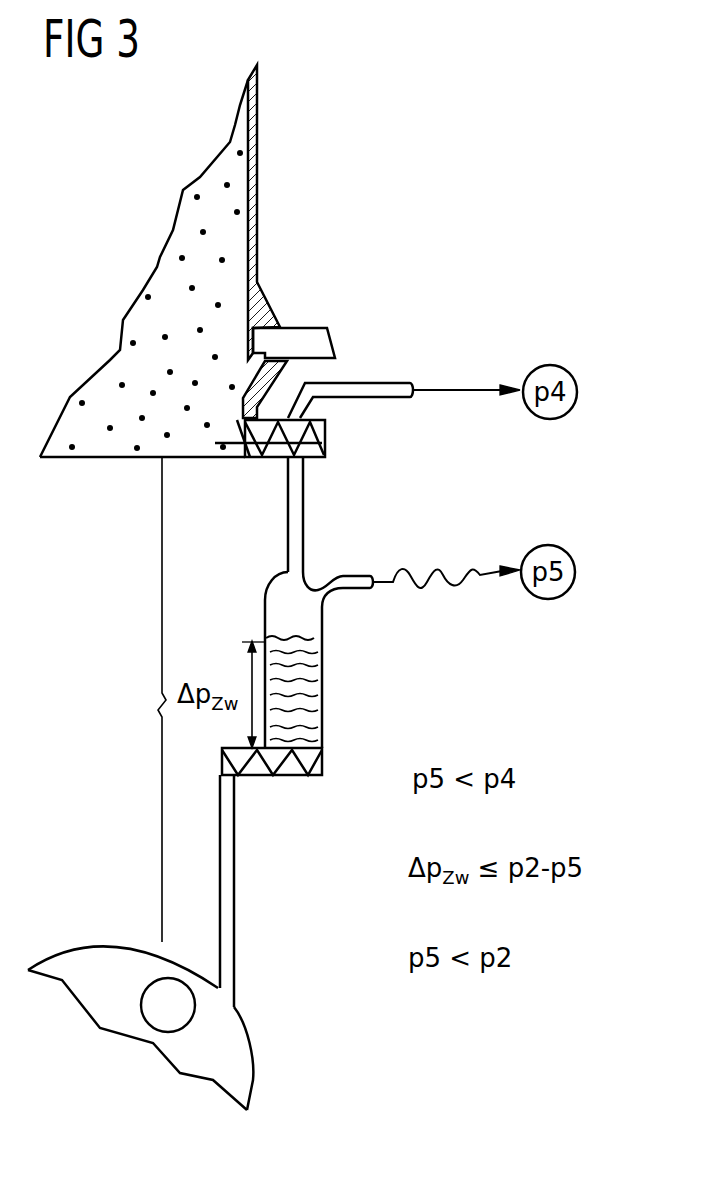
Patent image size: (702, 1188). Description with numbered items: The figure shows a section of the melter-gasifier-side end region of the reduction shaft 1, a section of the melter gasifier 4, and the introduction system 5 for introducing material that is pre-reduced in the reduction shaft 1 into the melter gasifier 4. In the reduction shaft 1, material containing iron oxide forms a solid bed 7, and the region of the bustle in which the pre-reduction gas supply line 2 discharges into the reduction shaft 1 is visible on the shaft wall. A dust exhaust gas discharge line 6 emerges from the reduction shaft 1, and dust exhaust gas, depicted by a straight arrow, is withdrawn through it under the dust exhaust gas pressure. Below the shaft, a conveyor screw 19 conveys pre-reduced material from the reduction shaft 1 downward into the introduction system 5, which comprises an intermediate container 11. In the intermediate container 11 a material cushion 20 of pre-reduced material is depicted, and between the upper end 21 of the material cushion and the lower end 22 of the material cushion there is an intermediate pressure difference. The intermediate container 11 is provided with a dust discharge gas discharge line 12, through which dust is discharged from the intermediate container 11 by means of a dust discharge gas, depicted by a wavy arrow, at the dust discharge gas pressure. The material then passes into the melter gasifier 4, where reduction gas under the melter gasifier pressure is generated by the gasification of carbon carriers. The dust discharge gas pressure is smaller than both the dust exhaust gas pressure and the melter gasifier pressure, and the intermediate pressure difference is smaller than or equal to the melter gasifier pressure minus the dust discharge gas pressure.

The reduction shaft 1 is at (253, 198).
The pre-reduction gas supply line 2 is at (302, 333).
The melter gasifier 4 is at (238, 1052).
The introduction system 5 is at (150, 699).
The dust exhaust gas discharge line 6 is at (362, 392).
The solid bed 7 is at (157, 283).
The intermediate container 11 is at (313, 692).
The dust discharge gas discharge line 12 is at (353, 582).
The conveyor screw 19 is at (325, 453).
The material cushion 20 is at (322, 670).
The upper end of the material cushion 21 is at (265, 638).
The lower end of the material cushion 22 is at (322, 760).